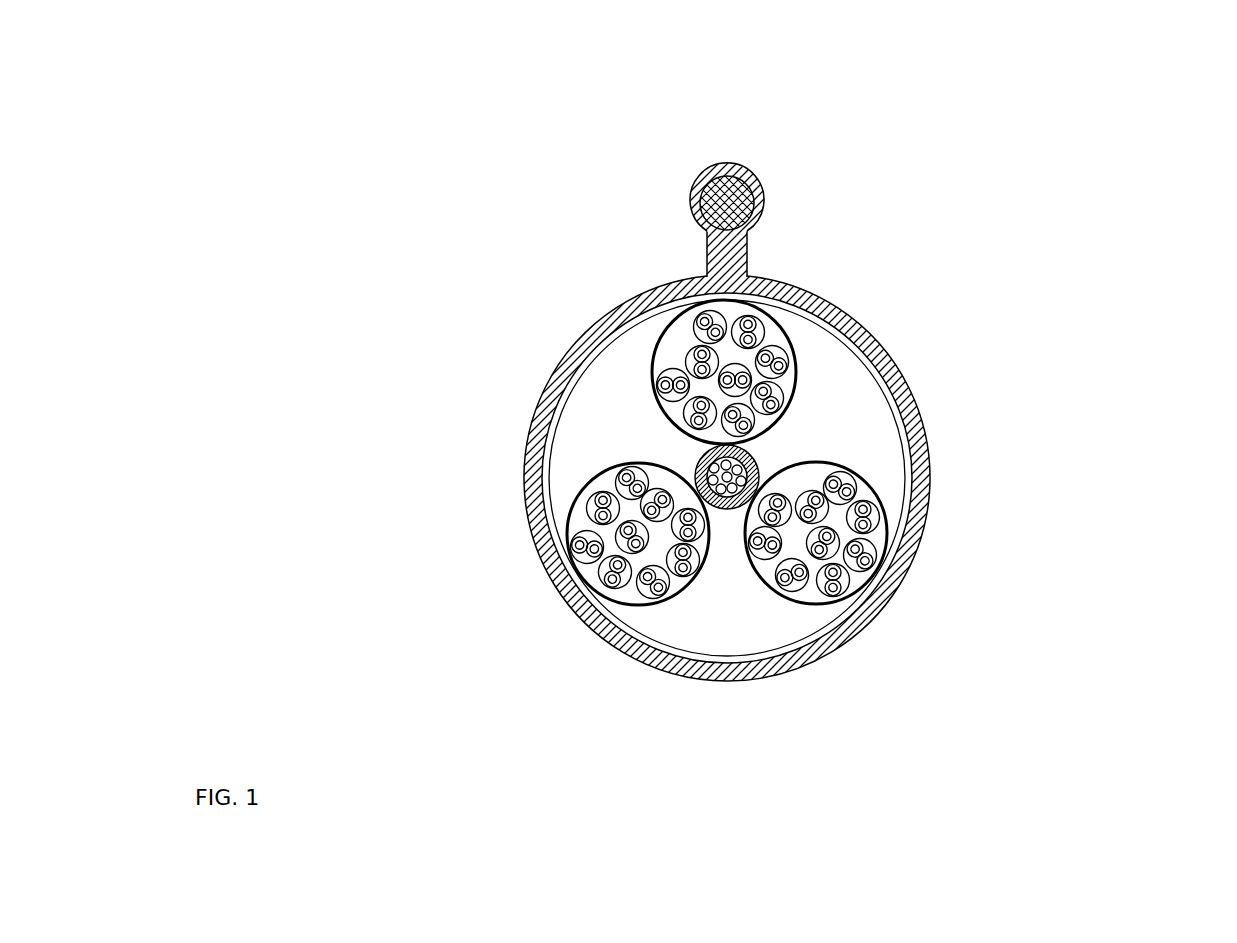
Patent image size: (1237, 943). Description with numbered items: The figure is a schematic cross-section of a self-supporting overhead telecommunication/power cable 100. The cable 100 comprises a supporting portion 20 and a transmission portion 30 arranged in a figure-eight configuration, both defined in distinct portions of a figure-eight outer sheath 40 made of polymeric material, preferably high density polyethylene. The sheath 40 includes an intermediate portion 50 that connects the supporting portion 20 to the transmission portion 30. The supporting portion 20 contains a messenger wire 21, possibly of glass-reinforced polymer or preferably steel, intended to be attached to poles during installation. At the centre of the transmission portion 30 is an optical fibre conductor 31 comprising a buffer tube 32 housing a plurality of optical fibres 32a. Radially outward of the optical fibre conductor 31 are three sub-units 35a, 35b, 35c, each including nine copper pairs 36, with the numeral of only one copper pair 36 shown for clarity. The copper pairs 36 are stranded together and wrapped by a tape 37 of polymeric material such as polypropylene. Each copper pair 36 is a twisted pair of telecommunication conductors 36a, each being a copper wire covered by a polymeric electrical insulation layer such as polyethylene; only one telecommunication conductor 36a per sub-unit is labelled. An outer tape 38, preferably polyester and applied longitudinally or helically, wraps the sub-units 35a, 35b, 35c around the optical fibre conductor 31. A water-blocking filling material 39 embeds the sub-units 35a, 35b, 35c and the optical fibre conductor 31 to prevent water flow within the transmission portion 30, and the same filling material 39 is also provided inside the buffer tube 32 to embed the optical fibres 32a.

The self-supporting overhead telecommunication/power cable 100 is at (1078, 178).
The supporting portion 20 is at (640, 143).
The messenger wire 21 is at (755, 174).
The intermediate portion 50 is at (760, 256).
The transmission portion 30 is at (680, 490).
The optical fibre conductor 31 is at (740, 430).
The buffer tube 32 is at (716, 466).
The optical fibres 32a is at (737, 467).
The sub-unit 35a is at (680, 605).
The sub-unit 35b is at (704, 338).
The sub-unit 35c is at (891, 605).
The copper pair 36 is at (803, 602).
The telecommunication conductor 36a is at (770, 350).
The tape 37 is at (889, 528).
The outer tape 38 is at (880, 372).
The water-blocking filling material 39 is at (563, 477).
The outer sheath 40 is at (932, 488).